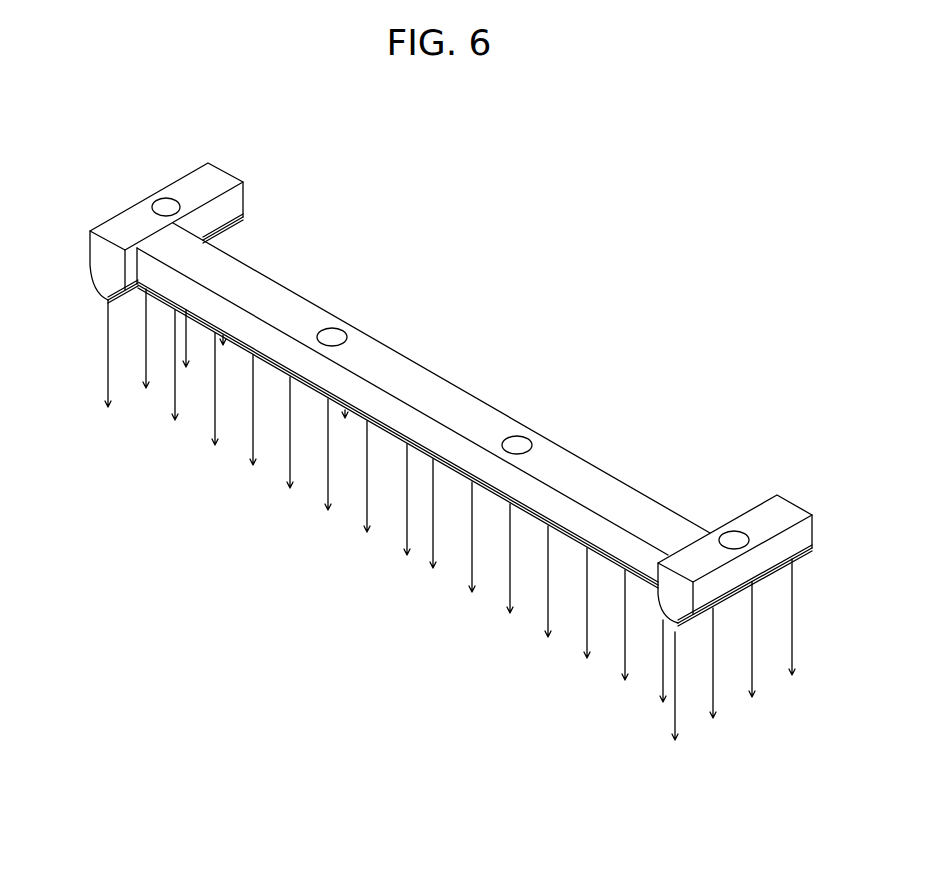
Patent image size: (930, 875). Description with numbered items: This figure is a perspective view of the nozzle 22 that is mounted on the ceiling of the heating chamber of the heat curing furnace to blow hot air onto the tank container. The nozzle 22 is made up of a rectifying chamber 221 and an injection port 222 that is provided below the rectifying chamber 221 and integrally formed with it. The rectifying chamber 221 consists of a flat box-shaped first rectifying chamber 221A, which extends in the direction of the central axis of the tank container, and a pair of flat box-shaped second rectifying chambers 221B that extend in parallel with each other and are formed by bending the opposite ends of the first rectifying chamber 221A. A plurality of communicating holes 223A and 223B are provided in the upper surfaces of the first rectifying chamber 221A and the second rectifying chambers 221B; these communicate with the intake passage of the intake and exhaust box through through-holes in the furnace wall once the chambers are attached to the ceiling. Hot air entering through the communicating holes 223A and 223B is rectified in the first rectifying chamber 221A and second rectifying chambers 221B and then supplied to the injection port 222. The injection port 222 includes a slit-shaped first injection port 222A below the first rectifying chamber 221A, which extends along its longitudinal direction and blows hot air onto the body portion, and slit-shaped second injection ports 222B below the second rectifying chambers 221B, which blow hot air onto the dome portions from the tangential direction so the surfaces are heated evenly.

The nozzle 22 is at (604, 188).
The rectifying chamber 221 is at (387, 343).
The first rectifying chamber 221A is at (418, 382).
The second rectifying chambers 221B is at (92, 267).
The injection port 222 is at (345, 420).
The first injection port 222A is at (452, 473).
The second injection ports 222B is at (127, 298).
The communicating holes 223A is at (330, 323).
The communicating holes 223B is at (156, 199).